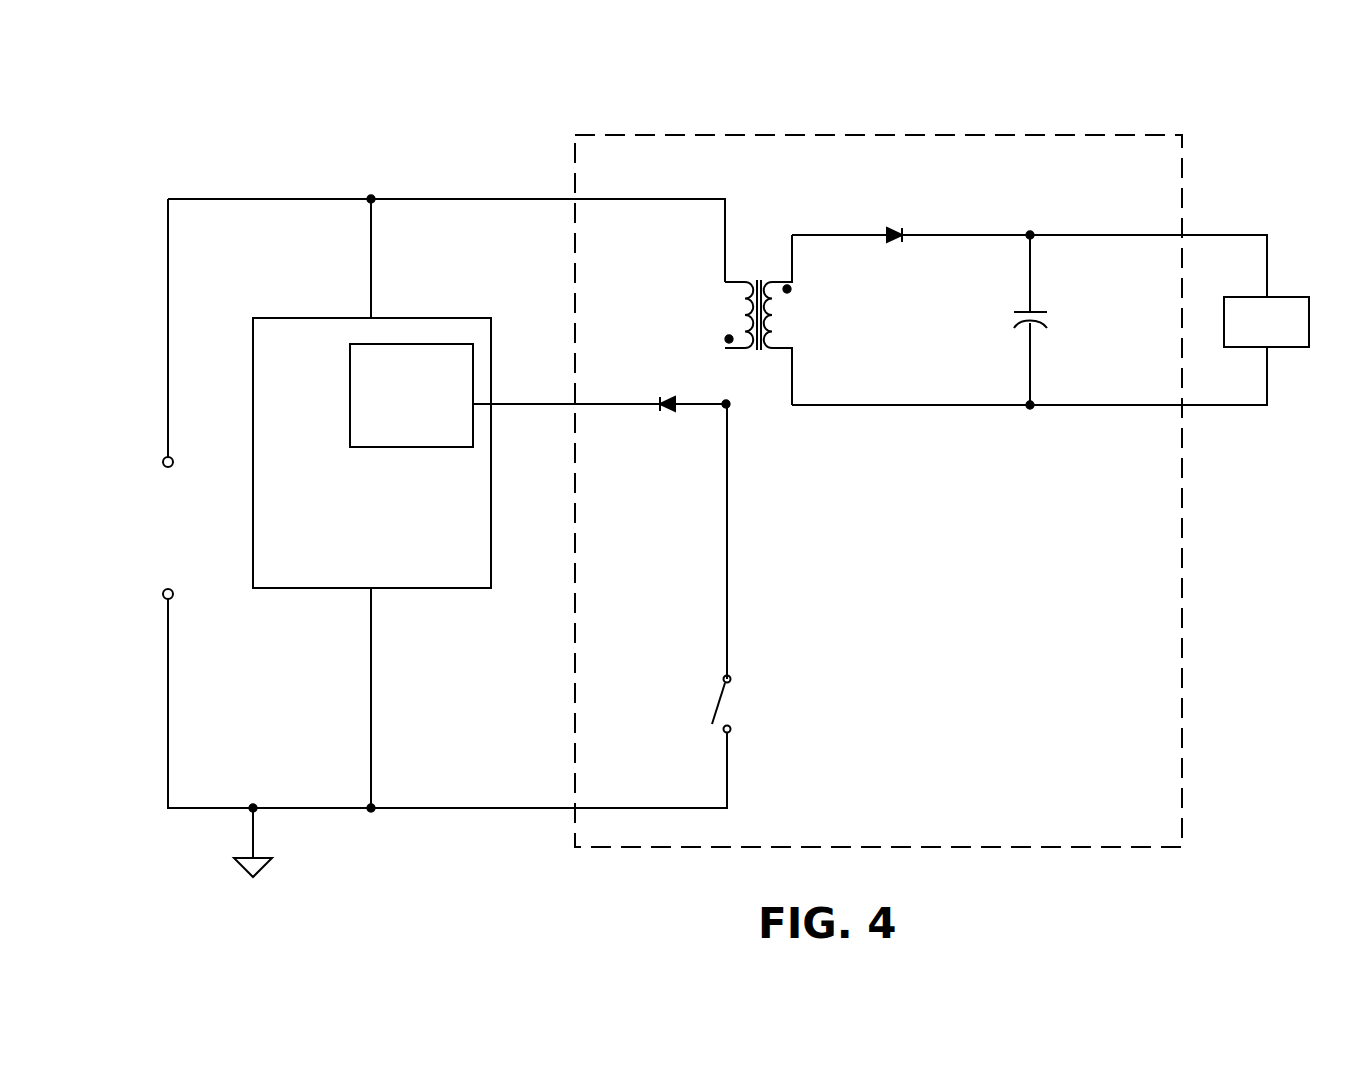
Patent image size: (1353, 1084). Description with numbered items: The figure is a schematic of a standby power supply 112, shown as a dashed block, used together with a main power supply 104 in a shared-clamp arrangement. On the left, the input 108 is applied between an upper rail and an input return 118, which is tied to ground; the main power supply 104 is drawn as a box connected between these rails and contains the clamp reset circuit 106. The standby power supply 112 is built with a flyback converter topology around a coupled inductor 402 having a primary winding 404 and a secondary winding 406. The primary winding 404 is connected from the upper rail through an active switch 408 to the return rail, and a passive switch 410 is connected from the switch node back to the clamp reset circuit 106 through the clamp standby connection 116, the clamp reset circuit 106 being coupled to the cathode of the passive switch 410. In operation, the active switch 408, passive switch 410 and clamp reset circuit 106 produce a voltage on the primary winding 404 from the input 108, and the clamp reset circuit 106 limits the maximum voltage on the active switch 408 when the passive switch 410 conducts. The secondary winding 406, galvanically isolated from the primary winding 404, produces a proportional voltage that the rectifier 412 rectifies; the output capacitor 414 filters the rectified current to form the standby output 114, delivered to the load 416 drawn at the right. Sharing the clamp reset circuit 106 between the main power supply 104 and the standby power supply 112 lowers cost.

The main power supply 104 is at (322, 606).
The clamp reset circuit 106 is at (341, 388).
The input 108 is at (148, 517).
The standby power supply 112 is at (1060, 122).
The standby output 114 is at (1102, 302).
The clamp standby connection 116 is at (521, 396).
The input return 118 is at (241, 846).
The coupled inductor T3 402 is at (760, 339).
The primary winding 404 is at (727, 316).
The secondary winding 406 is at (792, 316).
The active switch S4 408 is at (705, 686).
The passive switch D8 410 is at (662, 450).
The rectifier D9 412 is at (895, 212).
The output capacitor C3 414 is at (1022, 298).
The load 416 is at (1285, 290).